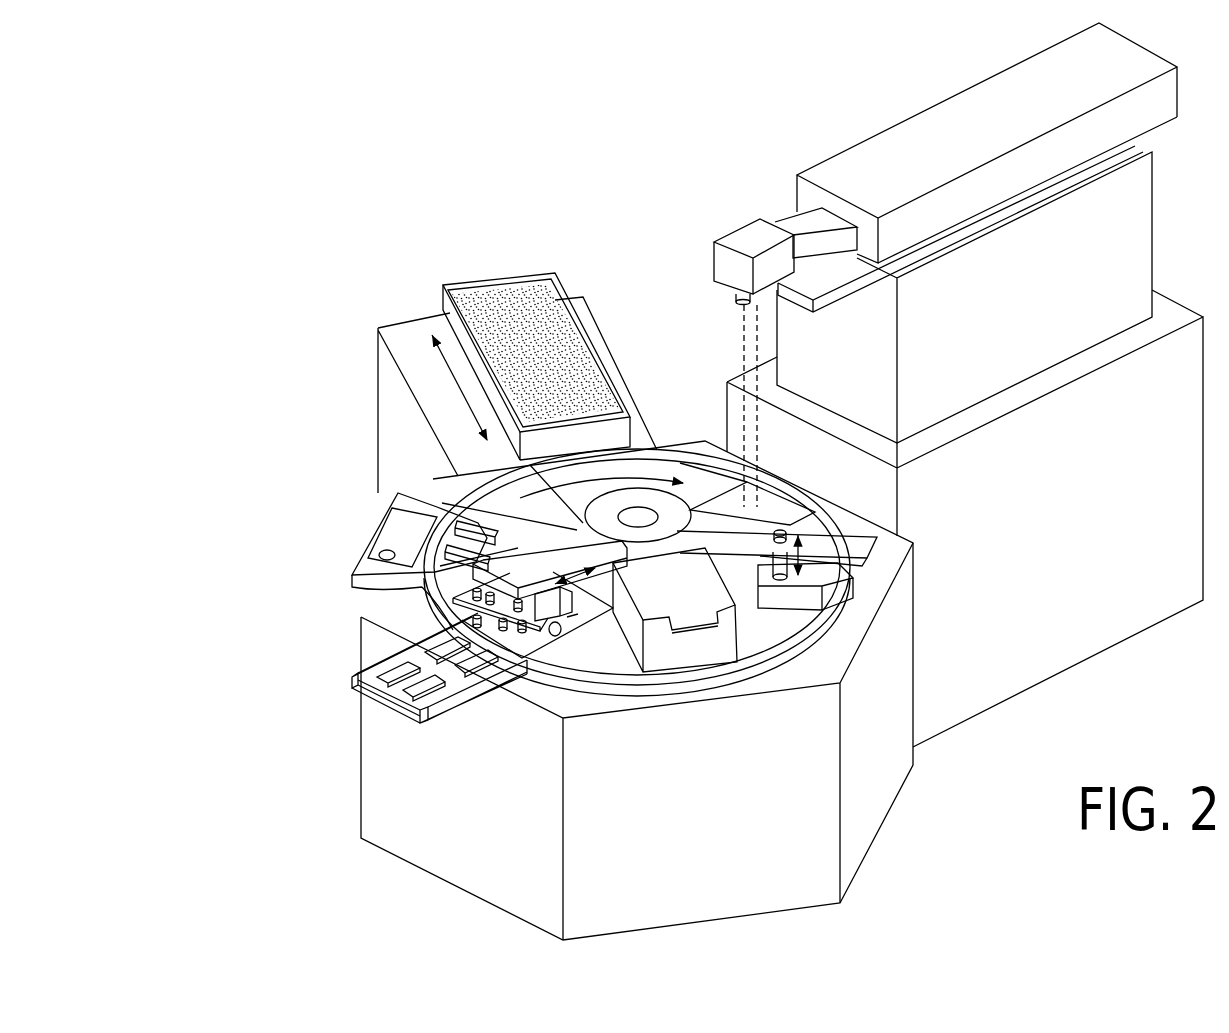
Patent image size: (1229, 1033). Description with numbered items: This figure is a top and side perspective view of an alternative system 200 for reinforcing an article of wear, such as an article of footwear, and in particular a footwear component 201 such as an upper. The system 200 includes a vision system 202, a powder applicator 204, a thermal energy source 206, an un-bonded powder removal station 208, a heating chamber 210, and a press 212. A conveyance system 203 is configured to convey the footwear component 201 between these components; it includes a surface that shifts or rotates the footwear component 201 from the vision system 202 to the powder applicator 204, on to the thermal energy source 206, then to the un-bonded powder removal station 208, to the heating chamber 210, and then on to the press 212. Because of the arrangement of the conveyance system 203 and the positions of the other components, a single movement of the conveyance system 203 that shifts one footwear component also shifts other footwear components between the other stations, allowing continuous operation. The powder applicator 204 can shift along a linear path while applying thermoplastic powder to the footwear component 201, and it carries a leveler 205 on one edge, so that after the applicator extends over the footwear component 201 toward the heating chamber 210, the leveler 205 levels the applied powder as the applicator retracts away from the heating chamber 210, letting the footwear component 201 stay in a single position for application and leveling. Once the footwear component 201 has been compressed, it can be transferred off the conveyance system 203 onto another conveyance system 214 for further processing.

The system 200 is at (282, 190).
The footwear component 201 is at (442, 503).
The vision system 202 is at (362, 538).
The conveyance system 203 is at (422, 582).
The powder applicator 204 is at (432, 308).
The leveler 205 is at (637, 458).
The thermal energy source 206 is at (746, 236).
The un-bonded powder removal station 208 is at (850, 586).
The heating chamber 210 is at (708, 660).
The press 212 is at (570, 616).
The another conveyance system 214 is at (398, 702).